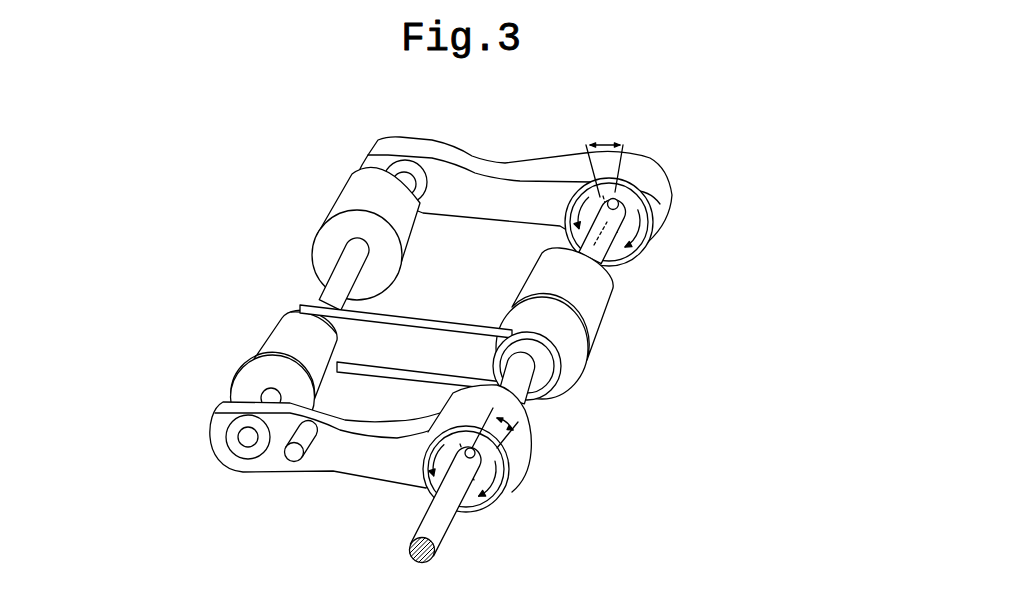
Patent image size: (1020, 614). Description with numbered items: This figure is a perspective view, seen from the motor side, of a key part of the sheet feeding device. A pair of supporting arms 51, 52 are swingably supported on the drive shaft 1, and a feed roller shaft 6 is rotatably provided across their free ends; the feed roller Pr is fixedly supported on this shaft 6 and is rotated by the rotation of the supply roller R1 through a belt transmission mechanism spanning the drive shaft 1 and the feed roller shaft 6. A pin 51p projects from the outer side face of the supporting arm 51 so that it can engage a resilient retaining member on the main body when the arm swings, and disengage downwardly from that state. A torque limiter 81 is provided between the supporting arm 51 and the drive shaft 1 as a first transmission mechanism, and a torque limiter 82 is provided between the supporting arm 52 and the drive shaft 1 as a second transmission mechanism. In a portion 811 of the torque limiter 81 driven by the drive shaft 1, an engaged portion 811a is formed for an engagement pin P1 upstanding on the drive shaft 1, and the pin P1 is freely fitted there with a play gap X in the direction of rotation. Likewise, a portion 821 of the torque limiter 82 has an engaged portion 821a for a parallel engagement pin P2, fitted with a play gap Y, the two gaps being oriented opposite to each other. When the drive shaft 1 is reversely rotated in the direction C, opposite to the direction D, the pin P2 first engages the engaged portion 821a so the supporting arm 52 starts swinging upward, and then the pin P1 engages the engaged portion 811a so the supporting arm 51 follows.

The drive shaft 1 is at (413, 560).
The feed roller shaft 6 is at (332, 290).
The supporting arm 51 is at (345, 462).
The pin 51p is at (290, 462).
The supporting arm 52 is at (503, 170).
The torque limiter 81 is at (420, 488).
The portion of the torque limiter 811 is at (443, 428).
The engaged portion 811a is at (510, 463).
The torque limiter 82 is at (622, 258).
The portion of the torque limiter 821 is at (657, 198).
The engaged portion 821a is at (620, 193).
The engagement pin P1 is at (463, 477).
The engagement pin P2 is at (633, 200).
The feed roller Pr is at (338, 208).
The supply roller R1 is at (610, 323).
The direction of reverse rotation C is at (653, 235).
The direction of rotation D is at (568, 210).
The play gap X is at (496, 424).
The play gap Y is at (604, 158).